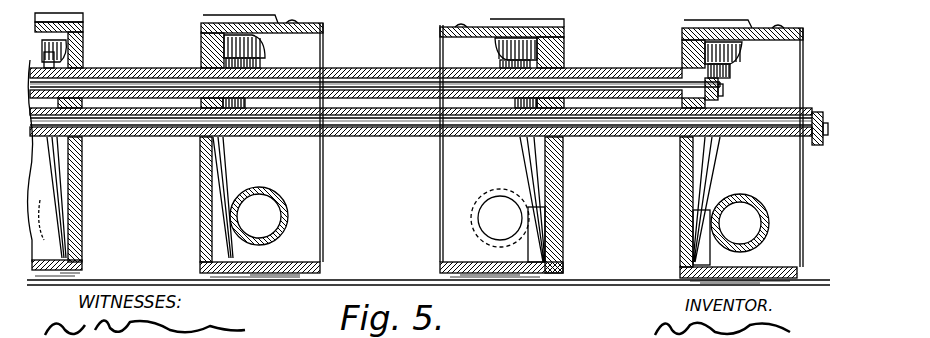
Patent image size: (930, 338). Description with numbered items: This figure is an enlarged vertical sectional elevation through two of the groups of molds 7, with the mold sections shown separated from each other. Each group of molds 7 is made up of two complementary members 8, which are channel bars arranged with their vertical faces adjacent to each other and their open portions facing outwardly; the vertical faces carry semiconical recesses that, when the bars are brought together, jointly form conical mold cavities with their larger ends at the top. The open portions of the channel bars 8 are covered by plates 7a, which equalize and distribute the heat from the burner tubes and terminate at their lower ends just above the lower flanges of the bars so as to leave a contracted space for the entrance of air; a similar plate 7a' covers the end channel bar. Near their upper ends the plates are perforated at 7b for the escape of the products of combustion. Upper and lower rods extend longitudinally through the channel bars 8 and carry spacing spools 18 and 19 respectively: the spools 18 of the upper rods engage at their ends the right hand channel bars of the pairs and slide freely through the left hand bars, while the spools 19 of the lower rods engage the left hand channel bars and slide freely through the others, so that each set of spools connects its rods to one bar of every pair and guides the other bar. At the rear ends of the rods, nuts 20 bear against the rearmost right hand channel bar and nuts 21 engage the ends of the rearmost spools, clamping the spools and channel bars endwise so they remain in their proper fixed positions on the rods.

The conical mold 7 is at (201, 43).
The plate 7a is at (374, 166).
The end partition wall 7a' is at (829, 201).
The perforation 7b is at (325, 48).
The complementary member 8 is at (428, 218).
The spacing spool 18 is at (412, 62).
The spacing spool 19 is at (422, 140).
The nut 20 is at (713, 82).
The nut 21 is at (818, 113).